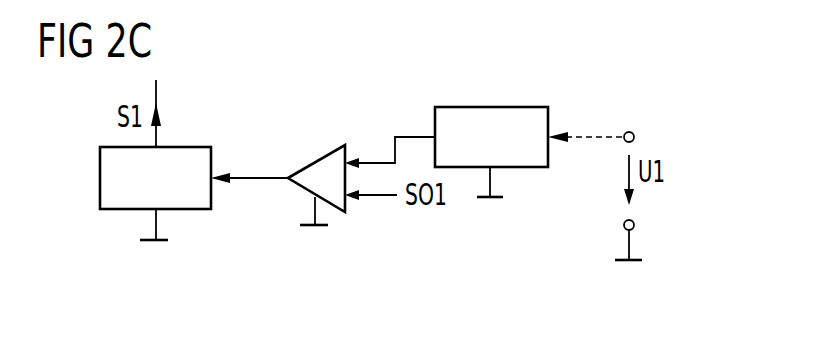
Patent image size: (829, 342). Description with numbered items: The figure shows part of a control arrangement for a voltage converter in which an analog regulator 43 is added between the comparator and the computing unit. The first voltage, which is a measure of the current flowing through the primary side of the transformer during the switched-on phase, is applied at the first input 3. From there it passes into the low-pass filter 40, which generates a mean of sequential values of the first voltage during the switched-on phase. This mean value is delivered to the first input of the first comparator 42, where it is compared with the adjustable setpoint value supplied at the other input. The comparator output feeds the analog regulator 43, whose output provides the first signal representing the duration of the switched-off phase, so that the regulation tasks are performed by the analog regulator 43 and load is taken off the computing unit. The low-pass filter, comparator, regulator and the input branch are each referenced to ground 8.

The first input 3 is at (631, 131).
The ground 8 is at (163, 243).
The low-pass filter 40 is at (492, 107).
The first comparator 42 is at (317, 162).
The analog regulator 43 is at (100, 178).